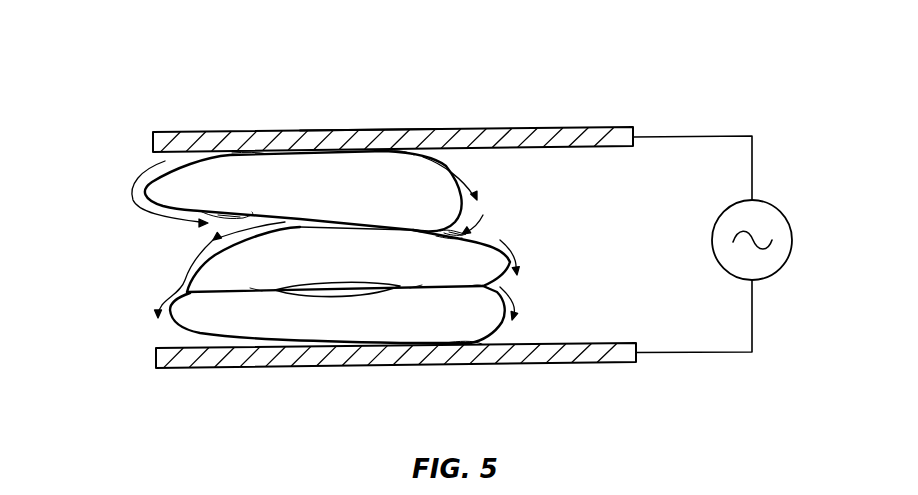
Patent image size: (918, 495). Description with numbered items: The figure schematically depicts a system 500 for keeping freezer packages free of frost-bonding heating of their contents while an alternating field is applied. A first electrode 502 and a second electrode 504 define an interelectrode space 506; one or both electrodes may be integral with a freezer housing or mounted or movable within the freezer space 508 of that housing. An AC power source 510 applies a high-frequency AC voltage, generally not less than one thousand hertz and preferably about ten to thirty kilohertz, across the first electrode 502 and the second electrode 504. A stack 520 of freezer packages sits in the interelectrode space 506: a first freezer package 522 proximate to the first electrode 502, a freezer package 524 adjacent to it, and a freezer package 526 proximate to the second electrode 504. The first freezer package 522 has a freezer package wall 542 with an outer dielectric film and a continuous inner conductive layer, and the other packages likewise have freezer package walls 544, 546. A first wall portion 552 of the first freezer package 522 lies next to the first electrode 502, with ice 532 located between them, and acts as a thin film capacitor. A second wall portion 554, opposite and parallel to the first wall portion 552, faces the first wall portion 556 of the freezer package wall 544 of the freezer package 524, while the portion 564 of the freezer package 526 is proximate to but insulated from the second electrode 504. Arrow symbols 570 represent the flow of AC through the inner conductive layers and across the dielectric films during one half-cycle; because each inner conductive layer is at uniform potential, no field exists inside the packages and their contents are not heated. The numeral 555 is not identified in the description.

The system 500 is at (185, 64).
The first electrode 502 is at (437, 129).
The second electrode 504 is at (476, 364).
The interelectrode space 506 is at (607, 207).
The freezer space 508 is at (630, 101).
The AC power source 510 is at (780, 270).
The stack 520 is at (119, 249).
The first freezer package 522 is at (329, 202).
The freezer package 524 is at (350, 267).
The freezer package 526 is at (314, 330).
The ice 532 is at (367, 129).
The freezer package wall 542 is at (410, 156).
The freezer package wall 544 is at (442, 240).
The freezer package wall 546 is at (435, 288).
The first wall portion 552 is at (268, 156).
The second wall portion 554 is at (420, 231).
The interior of first droplet 555 is at (375, 203).
The first wall portion 556 is at (415, 232).
The portion 564 is at (428, 345).
The arrow symbols 570 is at (133, 192).